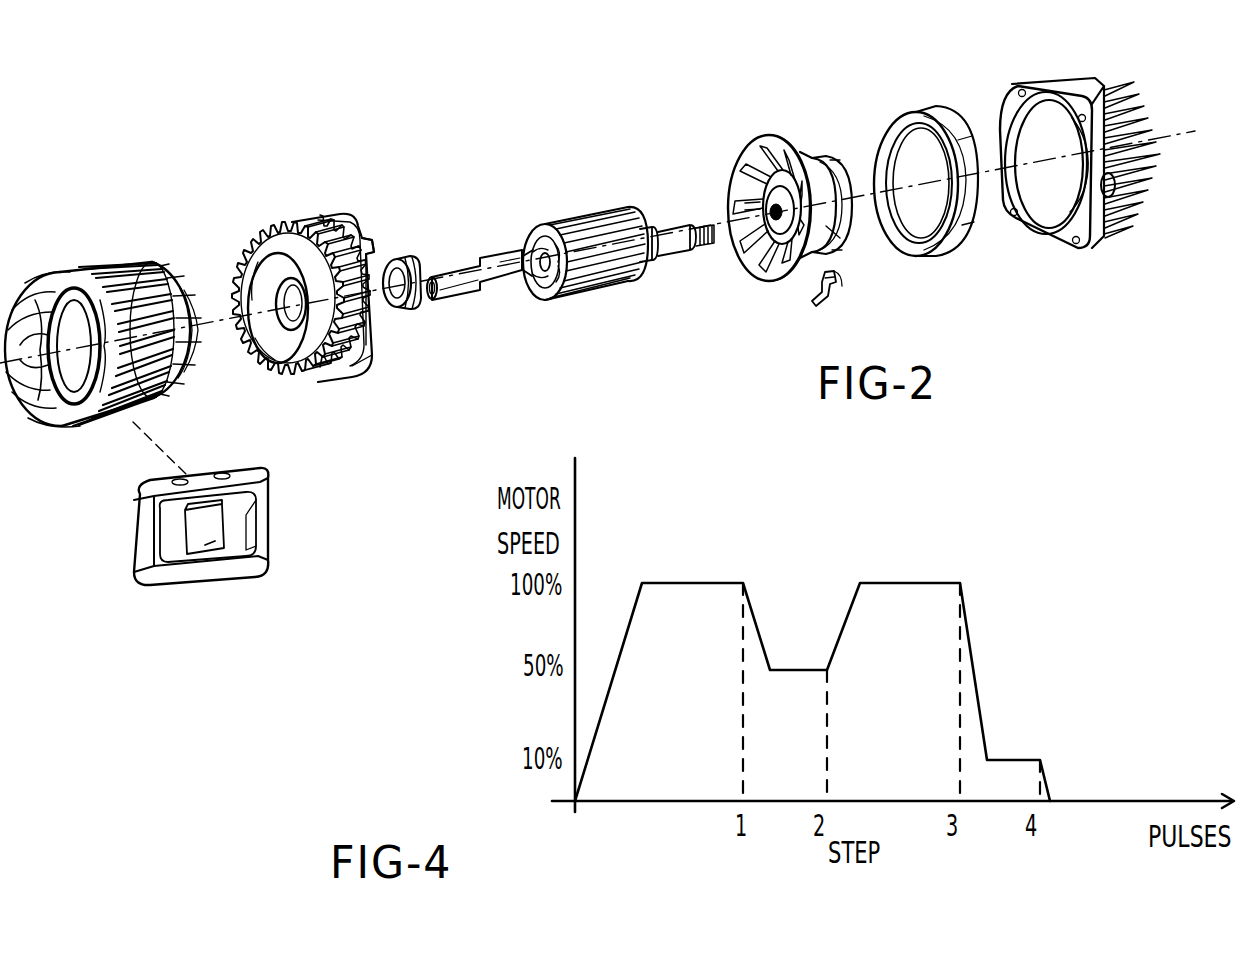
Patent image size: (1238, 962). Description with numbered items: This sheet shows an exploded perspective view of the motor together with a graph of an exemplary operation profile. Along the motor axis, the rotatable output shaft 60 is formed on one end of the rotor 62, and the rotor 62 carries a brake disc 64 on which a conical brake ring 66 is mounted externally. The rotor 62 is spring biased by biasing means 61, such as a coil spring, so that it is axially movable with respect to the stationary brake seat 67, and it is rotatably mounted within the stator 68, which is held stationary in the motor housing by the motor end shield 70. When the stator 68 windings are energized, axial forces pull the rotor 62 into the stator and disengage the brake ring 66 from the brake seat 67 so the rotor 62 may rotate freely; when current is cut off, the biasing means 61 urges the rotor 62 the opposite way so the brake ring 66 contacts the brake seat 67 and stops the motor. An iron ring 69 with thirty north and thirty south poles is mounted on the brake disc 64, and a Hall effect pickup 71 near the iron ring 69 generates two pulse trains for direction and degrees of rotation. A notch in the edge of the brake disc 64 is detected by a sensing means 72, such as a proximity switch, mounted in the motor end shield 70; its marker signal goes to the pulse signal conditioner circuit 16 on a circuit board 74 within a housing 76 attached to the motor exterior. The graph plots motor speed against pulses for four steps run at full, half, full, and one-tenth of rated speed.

The stator 68 is at (56, 290).
The motor end shield 70 is at (298, 228).
The sensing means 72 is at (368, 244).
The biasing means 61 is at (410, 262).
The output shaft 60 is at (450, 268).
The rotor 62 is at (556, 225).
The brake disc 64 is at (831, 150).
The iron ring 69 is at (840, 238).
The Hall effect pickup 71 is at (836, 296).
The conical brake ring 66 is at (968, 128).
The brake seat 67 is at (1060, 90).
The housing 76 is at (138, 555).
The circuit board 74 is at (215, 522).
The pulse signal conditioner circuit 16 is at (212, 545).